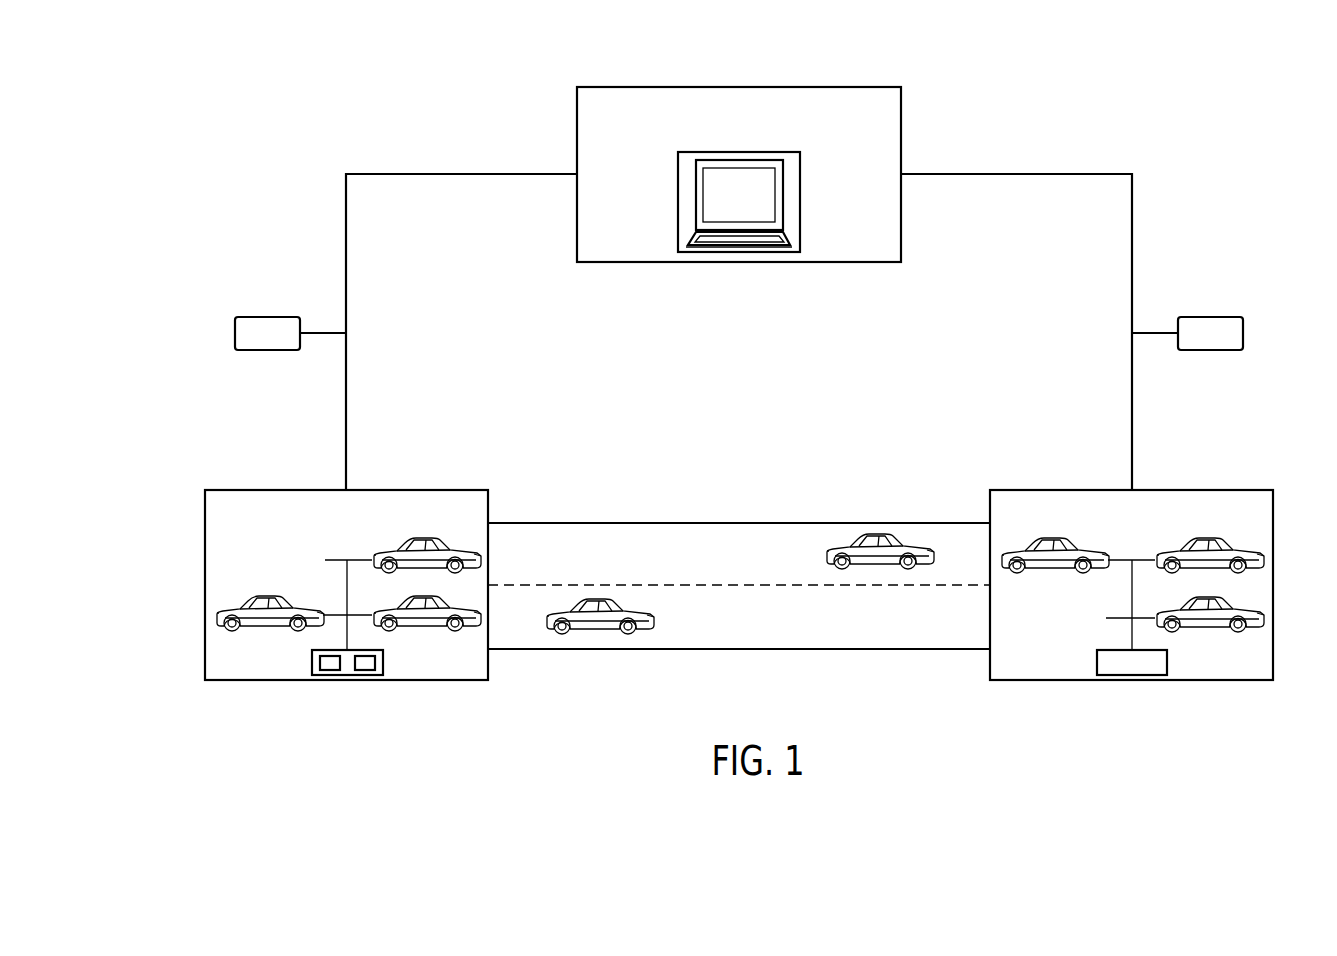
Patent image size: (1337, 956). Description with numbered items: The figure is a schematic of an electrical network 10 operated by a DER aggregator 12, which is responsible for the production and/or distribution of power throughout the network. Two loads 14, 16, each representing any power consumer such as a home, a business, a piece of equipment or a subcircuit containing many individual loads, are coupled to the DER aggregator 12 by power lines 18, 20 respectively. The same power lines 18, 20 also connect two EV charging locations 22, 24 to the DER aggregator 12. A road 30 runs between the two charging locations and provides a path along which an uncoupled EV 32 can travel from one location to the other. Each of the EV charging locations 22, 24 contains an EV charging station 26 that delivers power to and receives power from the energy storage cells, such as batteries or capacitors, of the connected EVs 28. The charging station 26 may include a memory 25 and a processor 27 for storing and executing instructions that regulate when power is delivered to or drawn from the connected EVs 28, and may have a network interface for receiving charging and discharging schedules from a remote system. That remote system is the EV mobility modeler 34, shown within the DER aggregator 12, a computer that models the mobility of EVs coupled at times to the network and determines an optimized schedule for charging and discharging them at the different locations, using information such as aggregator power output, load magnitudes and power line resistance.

The electrical network 10 is at (1175, 88).
The DER aggregator 12 is at (740, 87).
The load 14 is at (270, 317).
The load 16 is at (1213, 317).
The power line 18 is at (463, 174).
The power line 20 is at (1017, 174).
The EV charging location 22 is at (276, 490).
The EV charging location 24 is at (1204, 490).
The memory 25 is at (328, 676).
The EV charging station 26 is at (310, 665).
The processor 27 is at (365, 676).
The connected EV 28 is at (268, 598).
The road 30 is at (740, 650).
The uncoupled EV 32 is at (646, 620).
The EV mobility modeler 34 is at (800, 200).